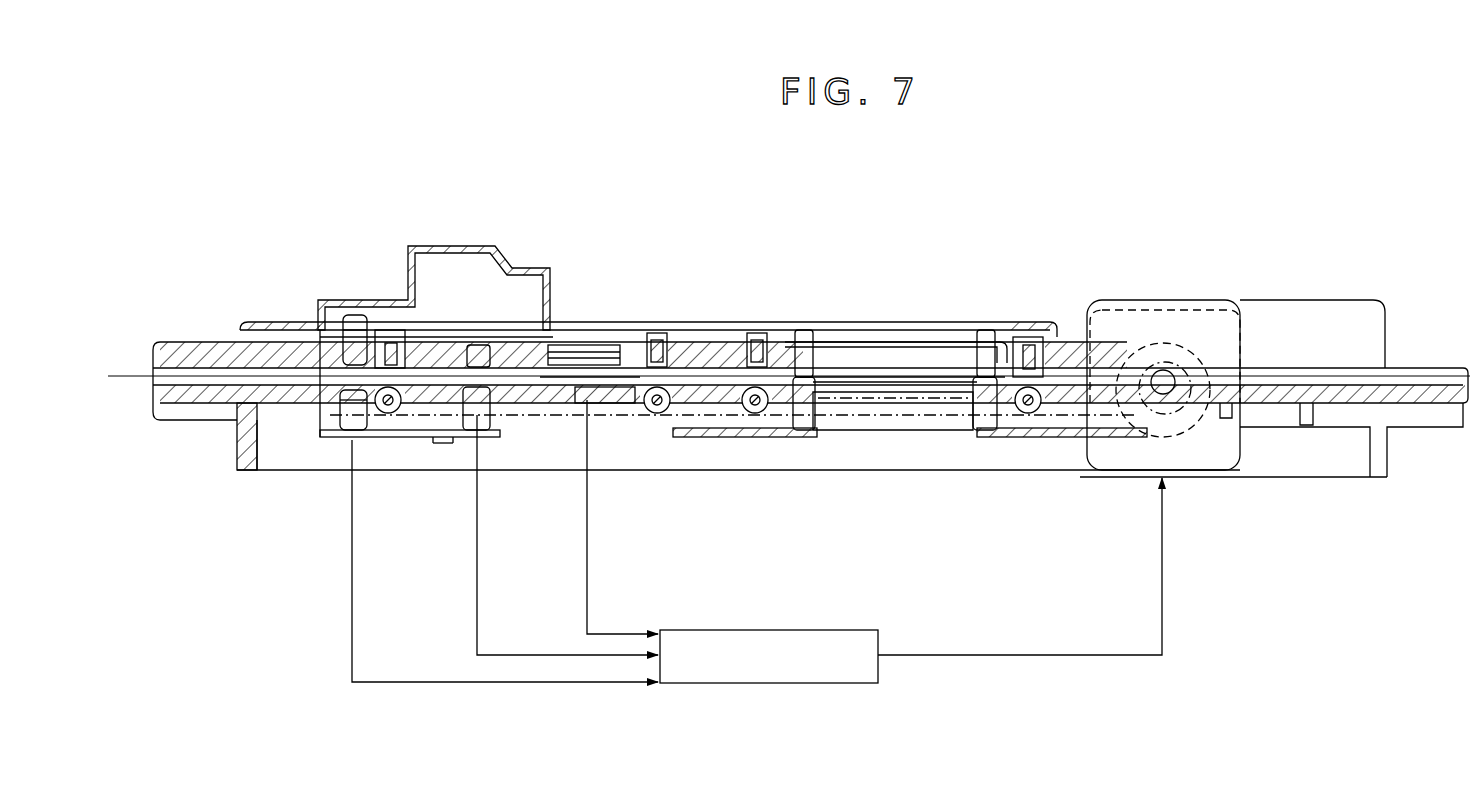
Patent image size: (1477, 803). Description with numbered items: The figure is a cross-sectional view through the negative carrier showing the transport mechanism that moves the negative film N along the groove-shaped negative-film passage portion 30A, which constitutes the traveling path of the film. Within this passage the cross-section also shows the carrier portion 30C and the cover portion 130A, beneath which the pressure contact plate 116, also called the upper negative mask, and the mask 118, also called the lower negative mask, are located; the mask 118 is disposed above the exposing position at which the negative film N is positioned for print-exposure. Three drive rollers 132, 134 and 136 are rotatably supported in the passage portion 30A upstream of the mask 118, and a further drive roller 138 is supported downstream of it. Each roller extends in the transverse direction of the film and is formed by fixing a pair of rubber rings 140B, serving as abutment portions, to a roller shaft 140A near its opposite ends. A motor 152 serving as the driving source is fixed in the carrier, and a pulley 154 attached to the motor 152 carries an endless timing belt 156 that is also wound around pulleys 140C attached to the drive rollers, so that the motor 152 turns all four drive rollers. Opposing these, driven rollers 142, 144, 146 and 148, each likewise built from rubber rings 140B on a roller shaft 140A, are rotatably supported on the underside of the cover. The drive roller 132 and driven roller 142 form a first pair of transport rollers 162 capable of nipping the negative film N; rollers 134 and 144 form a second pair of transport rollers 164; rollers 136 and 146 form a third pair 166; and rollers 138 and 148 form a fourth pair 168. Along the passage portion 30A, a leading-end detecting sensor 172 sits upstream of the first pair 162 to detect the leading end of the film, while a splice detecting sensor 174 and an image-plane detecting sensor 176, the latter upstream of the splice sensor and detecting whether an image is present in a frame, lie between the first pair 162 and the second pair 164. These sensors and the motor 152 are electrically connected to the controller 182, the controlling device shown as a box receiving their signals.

The negative film N is at (112, 376).
The negative-film passage portion 30A is at (935, 470).
The end cap housing 30C is at (293, 383).
The pressure contact plate 116 is at (838, 342).
The mask 118 is at (823, 367).
The cover 130A is at (515, 330).
The drive roller 132 is at (387, 413).
The drive roller 134 is at (650, 415).
The drive roller 136 is at (747, 415).
The drive roller 138 is at (1028, 413).
The roller shaft 140A is at (393, 323).
The rubber rings 140B is at (440, 330).
The pulleys 140C is at (398, 418).
The driven roller 142 is at (374, 338).
The driven roller 144 is at (652, 336).
The driven roller 146 is at (748, 336).
The driven roller 148 is at (1014, 338).
The motor 152 is at (1202, 472).
The pulley 154 is at (1193, 363).
The timing belt 156 is at (833, 437).
The first pair of transport rollers 162 is at (432, 377).
The second pair of transport rollers 164 is at (685, 370).
The third pair of transport rollers 166 is at (774, 342).
The fourth pair of transport rollers 168 is at (1058, 378).
The leading-end detecting sensor 172 is at (343, 420).
The splice detecting sensor 174 is at (512, 440).
The image-plane detecting sensor 176 is at (592, 430).
The controller 182 is at (763, 630).